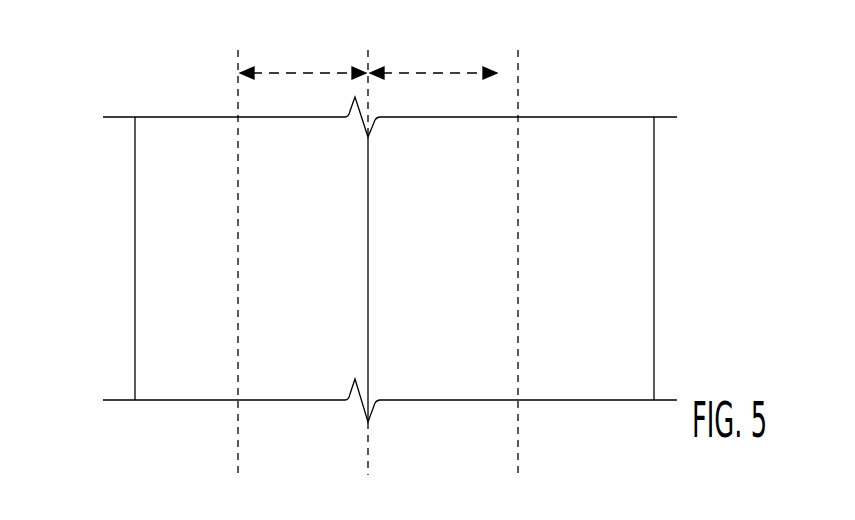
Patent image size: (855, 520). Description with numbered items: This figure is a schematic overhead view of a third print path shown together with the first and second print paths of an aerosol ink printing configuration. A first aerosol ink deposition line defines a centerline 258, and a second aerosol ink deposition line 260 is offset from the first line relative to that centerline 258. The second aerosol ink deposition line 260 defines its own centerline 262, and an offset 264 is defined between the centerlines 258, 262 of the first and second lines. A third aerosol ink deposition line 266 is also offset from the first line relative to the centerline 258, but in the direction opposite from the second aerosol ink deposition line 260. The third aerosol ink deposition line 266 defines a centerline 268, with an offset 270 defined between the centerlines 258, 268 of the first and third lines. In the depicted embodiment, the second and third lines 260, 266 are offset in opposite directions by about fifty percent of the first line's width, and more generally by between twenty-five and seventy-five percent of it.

The centerline 258 is at (370, 437).
The second aerosol ink deposition line 260 is at (153, 263).
The centerline 262 is at (236, 88).
The offset 264 is at (282, 72).
The third aerosol ink deposition line 266 is at (628, 262).
The centerline 268 is at (520, 418).
The offset 270 is at (415, 72).